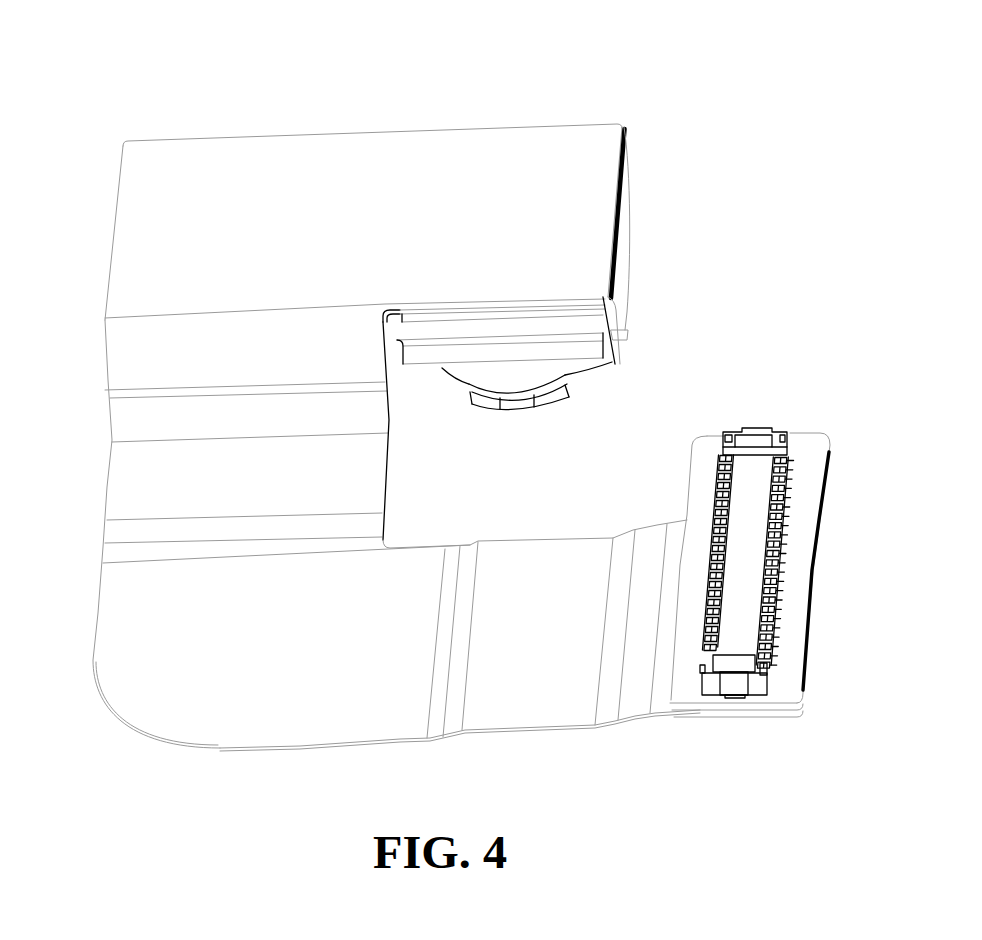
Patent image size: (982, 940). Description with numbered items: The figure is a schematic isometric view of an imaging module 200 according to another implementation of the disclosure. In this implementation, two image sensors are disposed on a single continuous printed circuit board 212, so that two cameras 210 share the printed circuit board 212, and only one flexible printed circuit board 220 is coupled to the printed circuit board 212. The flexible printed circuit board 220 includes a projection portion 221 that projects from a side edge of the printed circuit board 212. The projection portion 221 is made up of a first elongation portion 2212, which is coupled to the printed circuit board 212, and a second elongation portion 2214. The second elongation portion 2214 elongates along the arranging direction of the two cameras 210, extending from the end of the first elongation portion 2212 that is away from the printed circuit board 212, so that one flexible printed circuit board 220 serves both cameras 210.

The imaging module 200 is at (140, 61).
The camera 210 is at (550, 370).
The printed circuit board 212 is at (595, 225).
The flexible printed circuit board 220 is at (102, 484).
The projection portion 221 is at (530, 450).
The first elongation portion 2212 is at (367, 472).
The second elongation portion 2214 is at (418, 557).